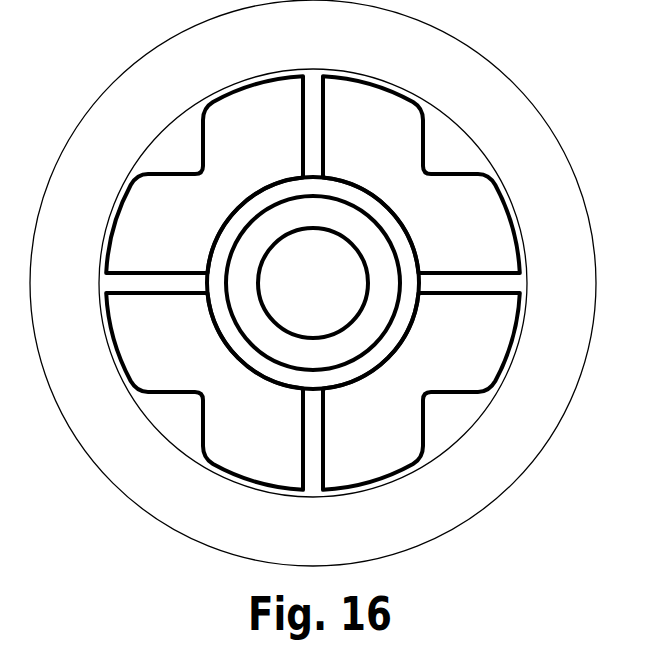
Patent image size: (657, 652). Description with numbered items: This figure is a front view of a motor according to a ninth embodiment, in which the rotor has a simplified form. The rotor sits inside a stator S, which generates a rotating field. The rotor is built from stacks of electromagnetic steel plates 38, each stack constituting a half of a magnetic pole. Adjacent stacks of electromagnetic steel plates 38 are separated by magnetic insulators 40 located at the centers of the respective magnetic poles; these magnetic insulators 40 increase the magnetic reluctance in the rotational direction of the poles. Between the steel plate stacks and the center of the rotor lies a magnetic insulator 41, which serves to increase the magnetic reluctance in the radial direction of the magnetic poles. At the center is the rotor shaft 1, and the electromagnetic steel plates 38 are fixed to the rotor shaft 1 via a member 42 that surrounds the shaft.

The rotor shaft 1 is at (352, 270).
The electromagnetic steel plates 38 is at (242, 108).
The magnetic insulators 40 is at (315, 95).
The magnetic insulator 41 is at (355, 188).
The member 42 is at (363, 223).
The stator S is at (487, 75).